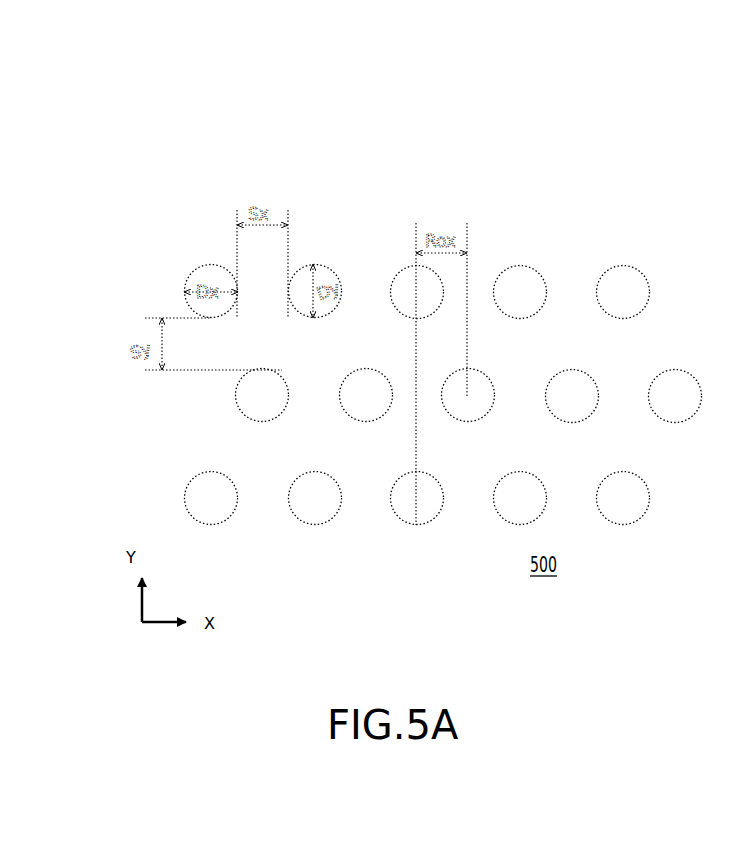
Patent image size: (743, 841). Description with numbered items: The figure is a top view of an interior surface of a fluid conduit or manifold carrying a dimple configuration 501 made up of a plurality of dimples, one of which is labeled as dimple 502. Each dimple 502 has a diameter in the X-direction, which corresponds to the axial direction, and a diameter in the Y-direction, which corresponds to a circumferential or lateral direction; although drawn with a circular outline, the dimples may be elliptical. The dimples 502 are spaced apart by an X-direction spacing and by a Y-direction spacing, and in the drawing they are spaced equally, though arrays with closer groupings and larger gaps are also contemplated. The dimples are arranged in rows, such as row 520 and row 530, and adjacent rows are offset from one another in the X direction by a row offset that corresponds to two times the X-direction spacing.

The dimple configuration 501 is at (384, 128).
The dimple 502 is at (637, 287).
The row 520 is at (204, 411).
The row 530 is at (155, 499).